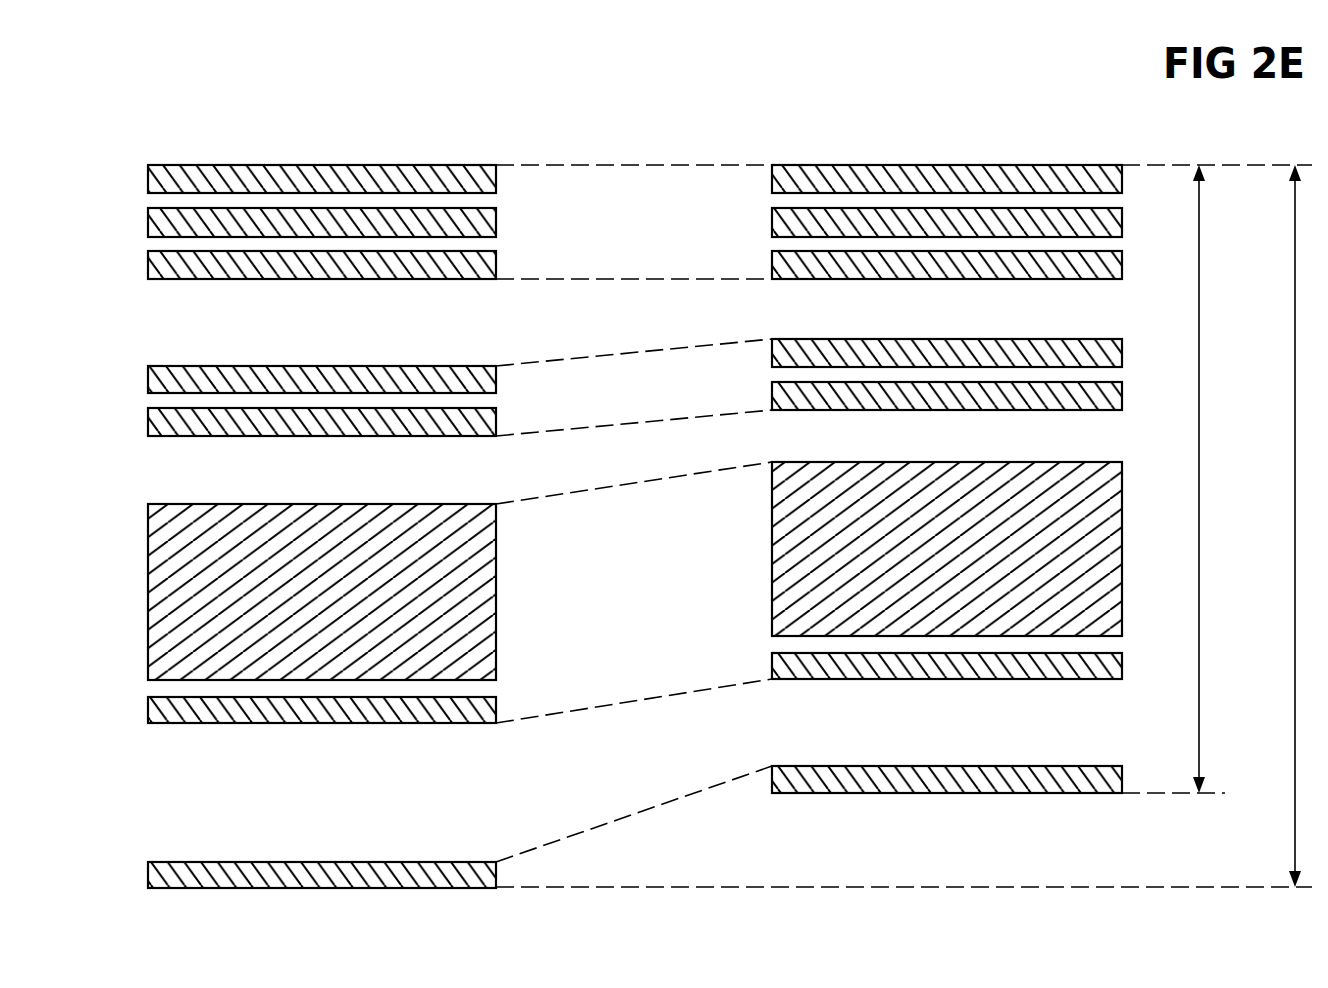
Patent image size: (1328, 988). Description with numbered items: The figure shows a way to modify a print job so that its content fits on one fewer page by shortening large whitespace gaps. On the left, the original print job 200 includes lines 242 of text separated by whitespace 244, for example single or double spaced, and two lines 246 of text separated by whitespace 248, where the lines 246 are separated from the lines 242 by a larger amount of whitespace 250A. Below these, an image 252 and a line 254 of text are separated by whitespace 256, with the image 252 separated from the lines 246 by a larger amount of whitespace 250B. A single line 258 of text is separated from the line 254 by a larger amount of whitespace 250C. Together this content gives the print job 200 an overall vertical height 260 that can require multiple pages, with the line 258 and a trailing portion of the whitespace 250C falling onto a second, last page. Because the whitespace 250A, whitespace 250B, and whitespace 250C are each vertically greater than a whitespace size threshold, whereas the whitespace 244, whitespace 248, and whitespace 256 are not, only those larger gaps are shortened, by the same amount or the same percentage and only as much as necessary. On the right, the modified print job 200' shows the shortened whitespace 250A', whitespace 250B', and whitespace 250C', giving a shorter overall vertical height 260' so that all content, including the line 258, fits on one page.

The print job 200 is at (322, 146).
The modified print job 200' is at (947, 146).
The lines of text 242 is at (148, 217).
The whitespace 244 is at (160, 244).
The lines of text 246 is at (148, 372).
The whitespace 248 is at (160, 402).
The whitespace 250A is at (533, 249).
The shortened whitespace 250A' is at (948, 309).
The whitespace 250B is at (533, 421).
The shortened whitespace 250B' is at (948, 436).
The whitespace 250C is at (803, 783).
The shortened whitespace 250C' is at (948, 723).
The image 252 is at (148, 547).
The line of text 254 is at (148, 708).
The whitespace 256 is at (160, 686).
The single line of text 258 is at (148, 877).
The overall vertical height 260 is at (1272, 526).
The shorter overall vertical height 260' is at (1217, 479).